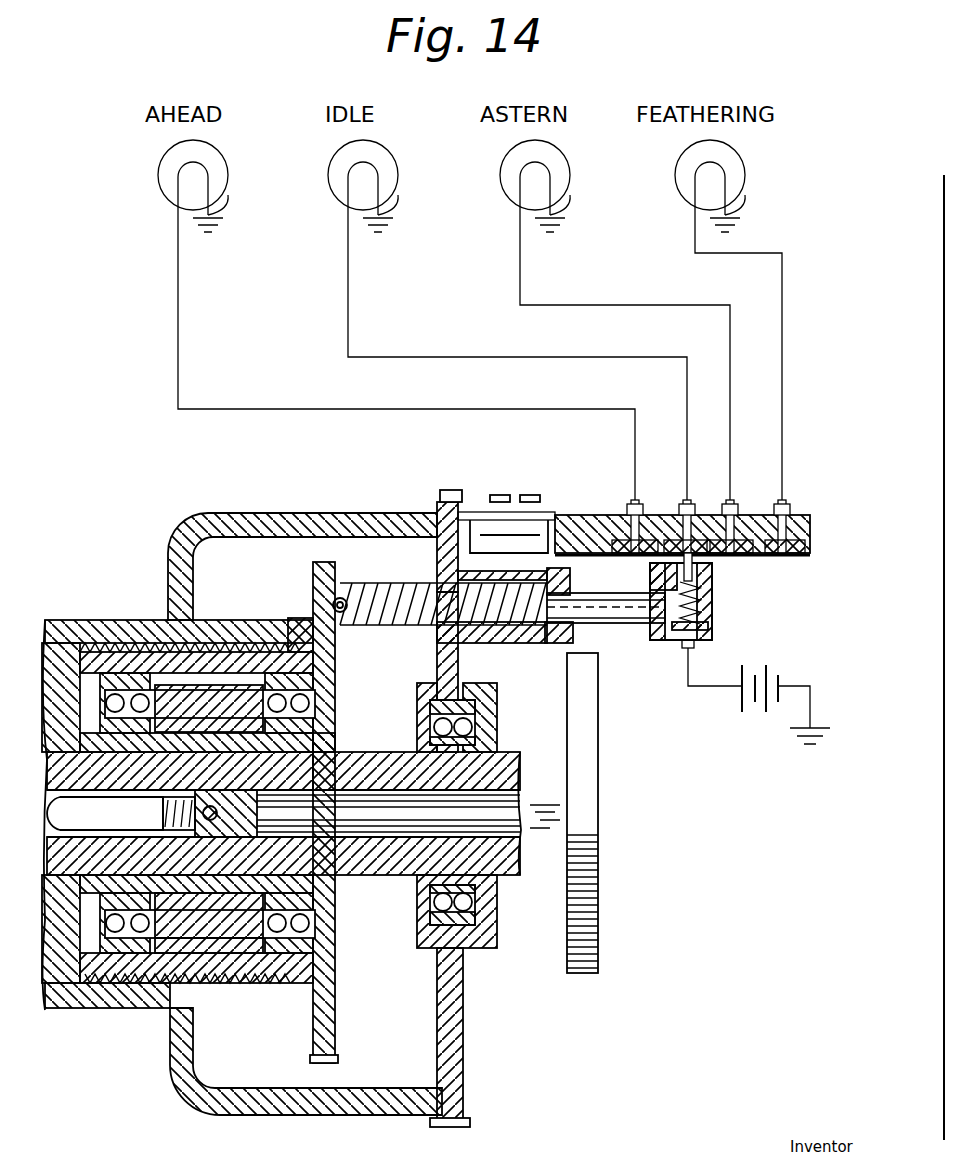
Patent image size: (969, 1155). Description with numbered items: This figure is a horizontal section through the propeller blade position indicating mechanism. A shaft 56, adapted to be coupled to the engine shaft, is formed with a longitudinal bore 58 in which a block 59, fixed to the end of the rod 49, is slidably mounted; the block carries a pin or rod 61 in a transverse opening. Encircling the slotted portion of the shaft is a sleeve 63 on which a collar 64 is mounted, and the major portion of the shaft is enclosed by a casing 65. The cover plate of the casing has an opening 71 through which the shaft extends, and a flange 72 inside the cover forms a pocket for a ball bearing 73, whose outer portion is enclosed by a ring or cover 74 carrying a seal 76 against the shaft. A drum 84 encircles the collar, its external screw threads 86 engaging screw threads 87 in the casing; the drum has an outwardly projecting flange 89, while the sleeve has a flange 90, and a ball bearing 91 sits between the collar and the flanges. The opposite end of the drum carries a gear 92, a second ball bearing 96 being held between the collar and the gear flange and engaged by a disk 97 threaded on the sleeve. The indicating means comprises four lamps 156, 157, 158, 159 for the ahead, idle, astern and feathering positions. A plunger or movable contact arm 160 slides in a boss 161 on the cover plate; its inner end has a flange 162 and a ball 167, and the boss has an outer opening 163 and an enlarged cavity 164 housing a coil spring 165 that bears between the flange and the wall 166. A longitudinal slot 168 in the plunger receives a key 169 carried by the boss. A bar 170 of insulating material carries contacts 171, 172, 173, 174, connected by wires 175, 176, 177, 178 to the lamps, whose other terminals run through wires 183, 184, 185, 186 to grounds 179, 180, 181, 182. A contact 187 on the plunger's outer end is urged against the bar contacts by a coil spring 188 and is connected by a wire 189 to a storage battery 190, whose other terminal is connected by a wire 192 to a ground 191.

The rod 49 is at (75, 820).
The shaft 56 is at (538, 760).
The longitudinal bore 58 is at (372, 788).
The block 59 is at (190, 797).
The pin or rod 61 is at (165, 811).
The sleeve 63 is at (263, 873).
The collar 64 is at (165, 1008).
The casing 65 is at (243, 513).
The opening 71 is at (432, 700).
The flange 72 is at (428, 708).
The ball bearing 73 is at (497, 918).
The ring or cover 74 is at (497, 712).
The seal 76 is at (497, 896).
The drum 84 is at (232, 963).
The screw threads 86 is at (215, 640).
The screw threads 87 is at (127, 632).
The outwardly projecting flange 89 is at (290, 624).
The outwardly projecting flange 90 is at (103, 704).
The ball bearing 91 is at (104, 922).
The gear 92 is at (335, 938).
The ball bearing 96 is at (335, 920).
The disk 97 is at (336, 722).
The electric lamp 156 is at (166, 172).
The electric lamp 157 is at (340, 165).
The electric lamp 158 is at (514, 165).
The electric lamp 159 is at (688, 165).
The plunger or movable contact arm 160 is at (413, 593).
The boss 161 is at (508, 572).
The flange 162 is at (330, 590).
The outer opening 163 is at (552, 636).
The enlarged elongated opening 164 is at (487, 643).
The coil spring 165 is at (398, 625).
The wall 166 is at (550, 512).
The ball 167 is at (333, 603).
The longitudinal slot 168 is at (612, 622).
The key 169 is at (576, 600).
The bar 170 is at (798, 530).
The contact 171 is at (633, 515).
The contact 172 is at (684, 520).
The contact 173 is at (740, 525).
The contact 174 is at (810, 548).
The wire 175 is at (178, 302).
The wire 176 is at (348, 300).
The wire 177 is at (520, 270).
The wire 178 is at (782, 326).
The ground 179 is at (218, 224).
The ground 180 is at (386, 226).
The ground 181 is at (562, 228).
The ground 182 is at (740, 231).
The wire 183 is at (244, 195).
The wire 184 is at (415, 195).
The wire 185 is at (587, 195).
The wire 186 is at (761, 195).
The contact 187 is at (700, 556).
The coil spring 188 is at (712, 606).
The wire 189 is at (686, 675).
The storage battery 190 is at (770, 658).
The ground 191 is at (800, 737).
The wire 192 is at (810, 701).